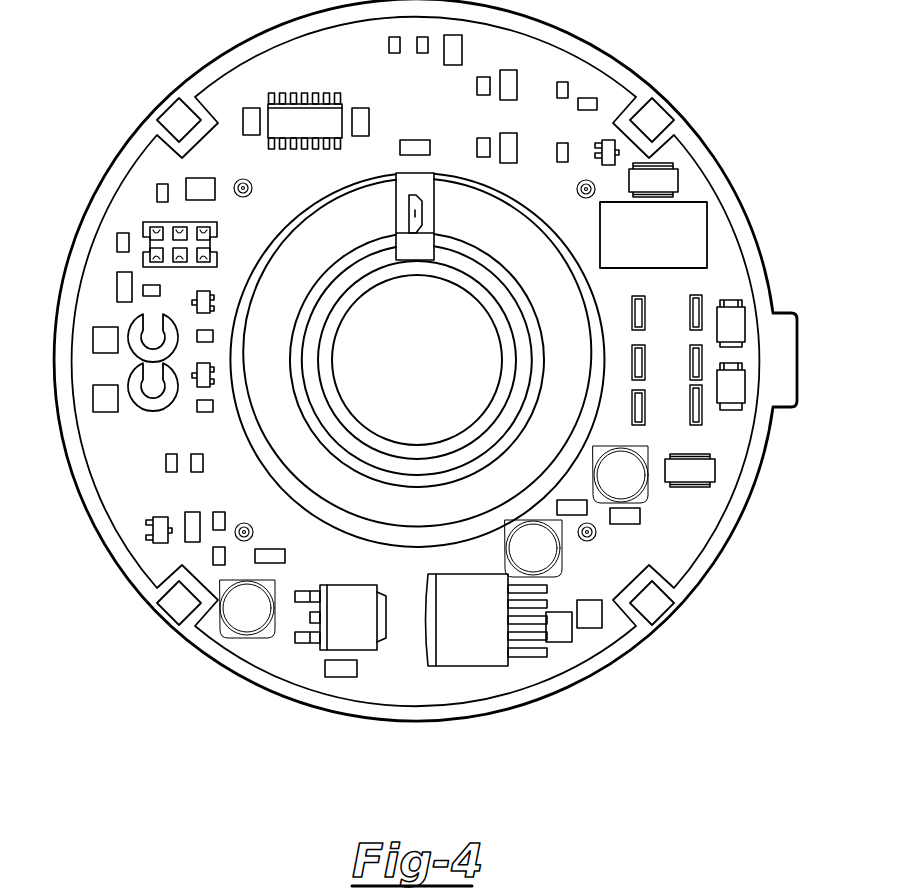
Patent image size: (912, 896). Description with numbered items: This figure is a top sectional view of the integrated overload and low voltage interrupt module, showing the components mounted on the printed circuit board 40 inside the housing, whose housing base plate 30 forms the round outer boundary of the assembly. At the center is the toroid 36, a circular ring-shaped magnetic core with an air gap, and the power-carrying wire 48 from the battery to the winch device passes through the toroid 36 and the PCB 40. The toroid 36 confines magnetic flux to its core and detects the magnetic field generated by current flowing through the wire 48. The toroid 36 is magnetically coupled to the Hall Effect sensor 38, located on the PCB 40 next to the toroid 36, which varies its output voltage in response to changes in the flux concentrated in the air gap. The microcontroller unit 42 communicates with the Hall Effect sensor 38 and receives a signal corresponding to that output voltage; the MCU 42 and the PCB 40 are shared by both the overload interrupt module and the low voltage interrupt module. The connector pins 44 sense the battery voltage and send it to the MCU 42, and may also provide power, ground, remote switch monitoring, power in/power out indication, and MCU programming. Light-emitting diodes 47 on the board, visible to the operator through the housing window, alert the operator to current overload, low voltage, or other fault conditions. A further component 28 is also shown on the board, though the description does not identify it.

The electronic component 28 is at (707, 217).
The housing base plate 30 is at (108, 167).
The toroid 36 is at (457, 193).
The Hall Effect sensor 38 is at (409, 195).
The printed circuit board 40 is at (748, 255).
The microcontroller unit 42 is at (268, 105).
The connector pins 44 is at (703, 418).
The light-emitting diodes 47 is at (131, 322).
The wire 48 is at (338, 395).